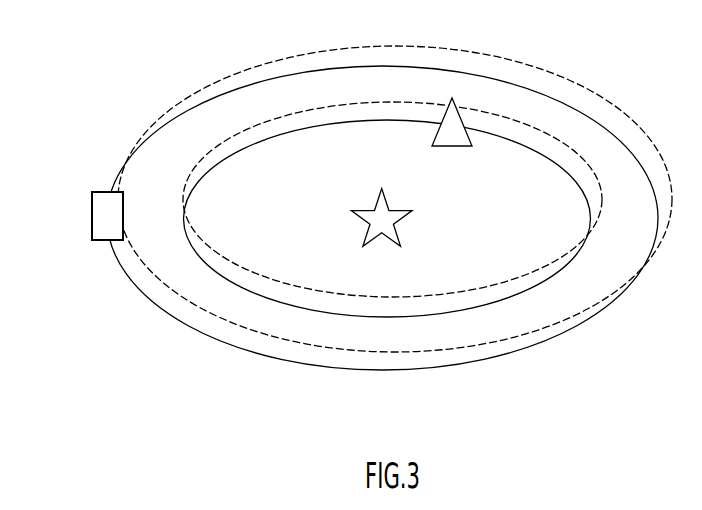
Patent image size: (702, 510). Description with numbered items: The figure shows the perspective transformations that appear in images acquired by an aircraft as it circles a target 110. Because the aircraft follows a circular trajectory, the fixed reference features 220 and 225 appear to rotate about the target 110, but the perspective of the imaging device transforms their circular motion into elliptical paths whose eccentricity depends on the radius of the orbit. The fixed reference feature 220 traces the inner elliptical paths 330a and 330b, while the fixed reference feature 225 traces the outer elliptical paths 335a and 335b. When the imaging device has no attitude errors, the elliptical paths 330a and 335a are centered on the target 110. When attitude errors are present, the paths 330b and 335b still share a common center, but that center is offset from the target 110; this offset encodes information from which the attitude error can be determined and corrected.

The target 110 is at (376, 202).
The fixed reference feature 220 is at (452, 148).
The fixed reference feature 225 is at (92, 230).
The elliptical path 330a is at (283, 308).
The elliptical path 330b is at (483, 290).
The elliptical path 335a is at (140, 293).
The elliptical path 335b is at (565, 79).